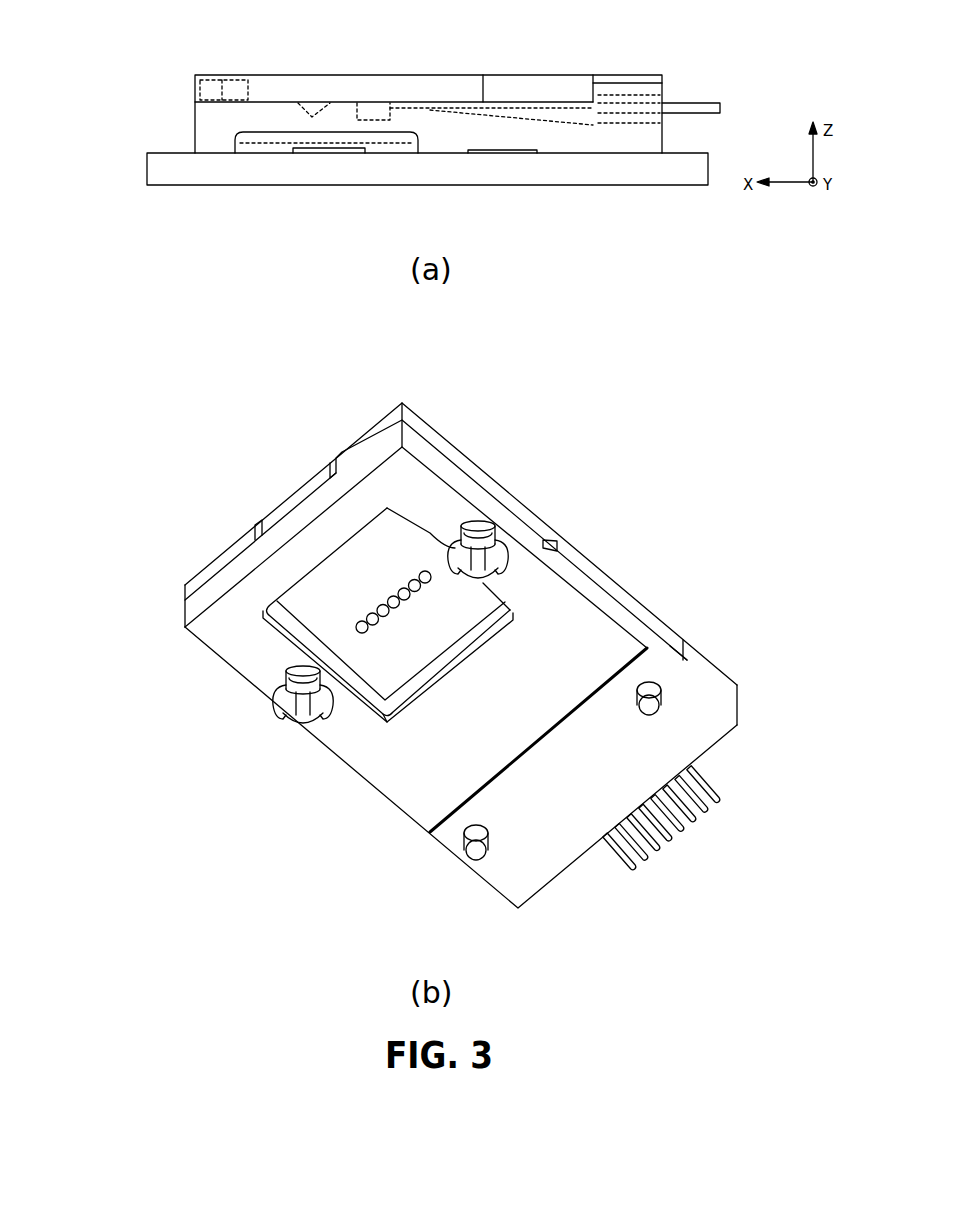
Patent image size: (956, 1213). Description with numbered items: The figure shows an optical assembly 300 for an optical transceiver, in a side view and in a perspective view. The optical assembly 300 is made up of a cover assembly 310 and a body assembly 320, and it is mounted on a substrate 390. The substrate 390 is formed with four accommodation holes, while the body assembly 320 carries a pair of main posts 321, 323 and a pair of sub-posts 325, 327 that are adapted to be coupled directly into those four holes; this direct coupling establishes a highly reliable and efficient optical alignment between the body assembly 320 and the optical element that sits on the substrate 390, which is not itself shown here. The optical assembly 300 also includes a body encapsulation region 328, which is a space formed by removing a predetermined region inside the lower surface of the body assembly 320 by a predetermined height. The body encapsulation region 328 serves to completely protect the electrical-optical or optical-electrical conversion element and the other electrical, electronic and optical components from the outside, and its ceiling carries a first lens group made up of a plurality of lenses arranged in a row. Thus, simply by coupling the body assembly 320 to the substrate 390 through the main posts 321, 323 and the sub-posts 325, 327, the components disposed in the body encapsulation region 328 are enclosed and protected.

The optical assembly 300 is at (101, 73).
The cover assembly 310 is at (195, 88).
The body assembly 320 is at (195, 118).
The main post 321 is at (480, 530).
The main post 323 is at (297, 730).
The sub-post 325 is at (650, 686).
The sub-post 327 is at (476, 860).
The body encapsulation region 328 is at (278, 130).
The substrate 390 is at (613, 186).